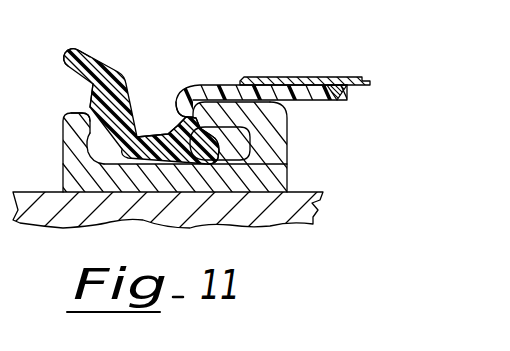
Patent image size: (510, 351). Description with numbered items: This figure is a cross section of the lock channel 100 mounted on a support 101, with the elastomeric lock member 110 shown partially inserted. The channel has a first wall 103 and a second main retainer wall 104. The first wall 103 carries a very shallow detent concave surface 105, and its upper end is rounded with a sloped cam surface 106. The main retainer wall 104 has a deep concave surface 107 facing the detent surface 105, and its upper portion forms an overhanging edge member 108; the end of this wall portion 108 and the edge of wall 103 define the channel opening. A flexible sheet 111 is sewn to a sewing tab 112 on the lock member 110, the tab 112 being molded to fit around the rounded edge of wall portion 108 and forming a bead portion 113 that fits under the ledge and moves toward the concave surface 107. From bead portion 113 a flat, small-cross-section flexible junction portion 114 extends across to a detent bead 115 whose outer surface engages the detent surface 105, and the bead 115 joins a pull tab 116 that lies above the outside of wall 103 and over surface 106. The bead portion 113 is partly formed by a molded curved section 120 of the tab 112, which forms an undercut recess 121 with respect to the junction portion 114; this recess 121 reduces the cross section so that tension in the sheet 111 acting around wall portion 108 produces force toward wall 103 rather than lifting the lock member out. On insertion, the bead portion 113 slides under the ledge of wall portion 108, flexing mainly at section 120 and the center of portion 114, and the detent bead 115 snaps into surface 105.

The lock channel 100 is at (258, 186).
The support 101 is at (310, 207).
The first wall 103 is at (67, 181).
The main retainer wall 104 is at (270, 165).
The detent concave surface 105 is at (89, 150).
The cam surface 106 is at (87, 116).
The deep concave surface 107 is at (250, 142).
The overhanging edge member 108 is at (206, 110).
The lock member 110 is at (160, 86).
The flexible sheet 111 is at (308, 77).
The sewing tab 112 is at (195, 84).
The bead portion 113 is at (232, 163).
The flexible junction portion 114 is at (147, 155).
The detent bead 115 is at (92, 98).
The pull tab 116 is at (97, 67).
The molded curved section 120 is at (186, 118).
The undercut recess 121 is at (187, 129).